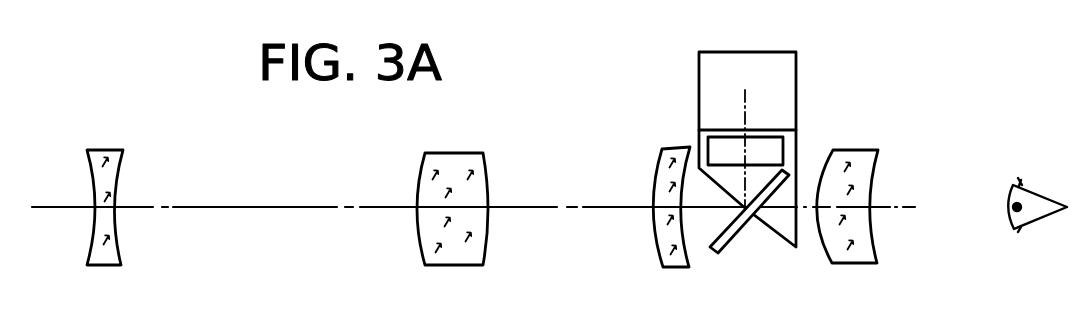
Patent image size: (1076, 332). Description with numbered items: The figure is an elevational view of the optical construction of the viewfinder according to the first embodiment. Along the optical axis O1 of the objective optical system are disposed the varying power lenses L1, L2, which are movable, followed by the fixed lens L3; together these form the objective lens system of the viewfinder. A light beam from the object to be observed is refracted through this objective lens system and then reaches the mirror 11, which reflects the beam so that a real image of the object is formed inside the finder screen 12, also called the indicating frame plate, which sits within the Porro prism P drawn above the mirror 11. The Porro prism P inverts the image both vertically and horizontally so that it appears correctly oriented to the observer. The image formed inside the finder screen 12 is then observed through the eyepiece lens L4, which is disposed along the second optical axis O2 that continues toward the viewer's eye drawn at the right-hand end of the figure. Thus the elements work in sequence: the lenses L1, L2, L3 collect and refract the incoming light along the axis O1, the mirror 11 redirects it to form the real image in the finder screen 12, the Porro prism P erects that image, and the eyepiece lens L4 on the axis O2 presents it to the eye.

The varying power lens L1 is at (112, 150).
The varying power lens L2 is at (475, 162).
The fixed lens L3 is at (667, 152).
The eyepiece lens L4 is at (865, 170).
The optical axis O1 is at (240, 208).
The optical axis O2 is at (910, 210).
The Porro prism P is at (800, 140).
The mirror 11 is at (727, 247).
The finder screen 12 is at (773, 145).